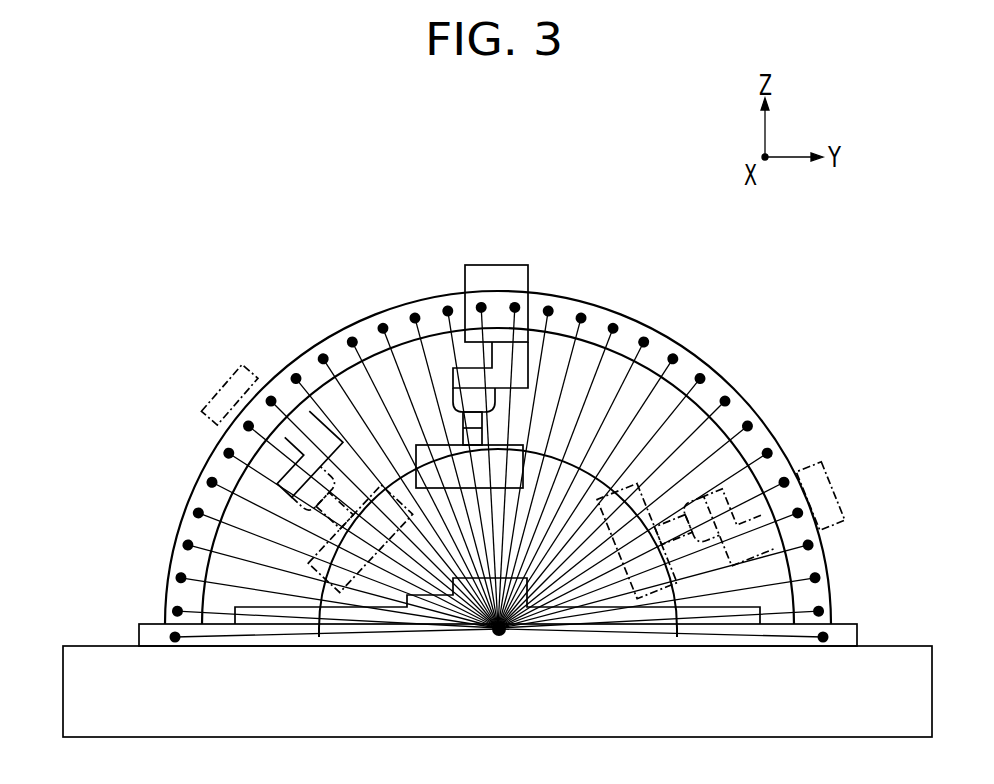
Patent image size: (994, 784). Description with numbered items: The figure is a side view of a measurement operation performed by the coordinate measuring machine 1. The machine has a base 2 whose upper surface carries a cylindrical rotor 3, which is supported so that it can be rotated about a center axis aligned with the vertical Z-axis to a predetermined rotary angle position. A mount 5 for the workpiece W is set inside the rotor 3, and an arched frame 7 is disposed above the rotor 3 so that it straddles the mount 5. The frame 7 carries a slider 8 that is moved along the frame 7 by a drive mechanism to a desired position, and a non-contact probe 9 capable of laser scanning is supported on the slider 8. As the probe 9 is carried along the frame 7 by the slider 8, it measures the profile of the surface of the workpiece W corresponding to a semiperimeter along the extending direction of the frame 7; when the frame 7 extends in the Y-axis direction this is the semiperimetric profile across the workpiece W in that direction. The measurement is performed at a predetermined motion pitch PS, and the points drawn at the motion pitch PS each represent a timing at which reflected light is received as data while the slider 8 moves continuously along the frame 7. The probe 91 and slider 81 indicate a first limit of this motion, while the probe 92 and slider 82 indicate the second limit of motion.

The coordinate measuring machine 1 is at (263, 220).
The base 2 is at (63, 657).
The rotor 3 is at (138, 637).
The mount 5 is at (833, 612).
The frame 7 is at (623, 335).
The slider 8 is at (503, 282).
The probe 9 is at (515, 480).
The slider 81 is at (220, 398).
The slider 82 is at (833, 470).
The probe 91 is at (363, 493).
The probe 92 is at (733, 427).
The workpiece W is at (612, 488).
The motion pitch PS is at (192, 472).